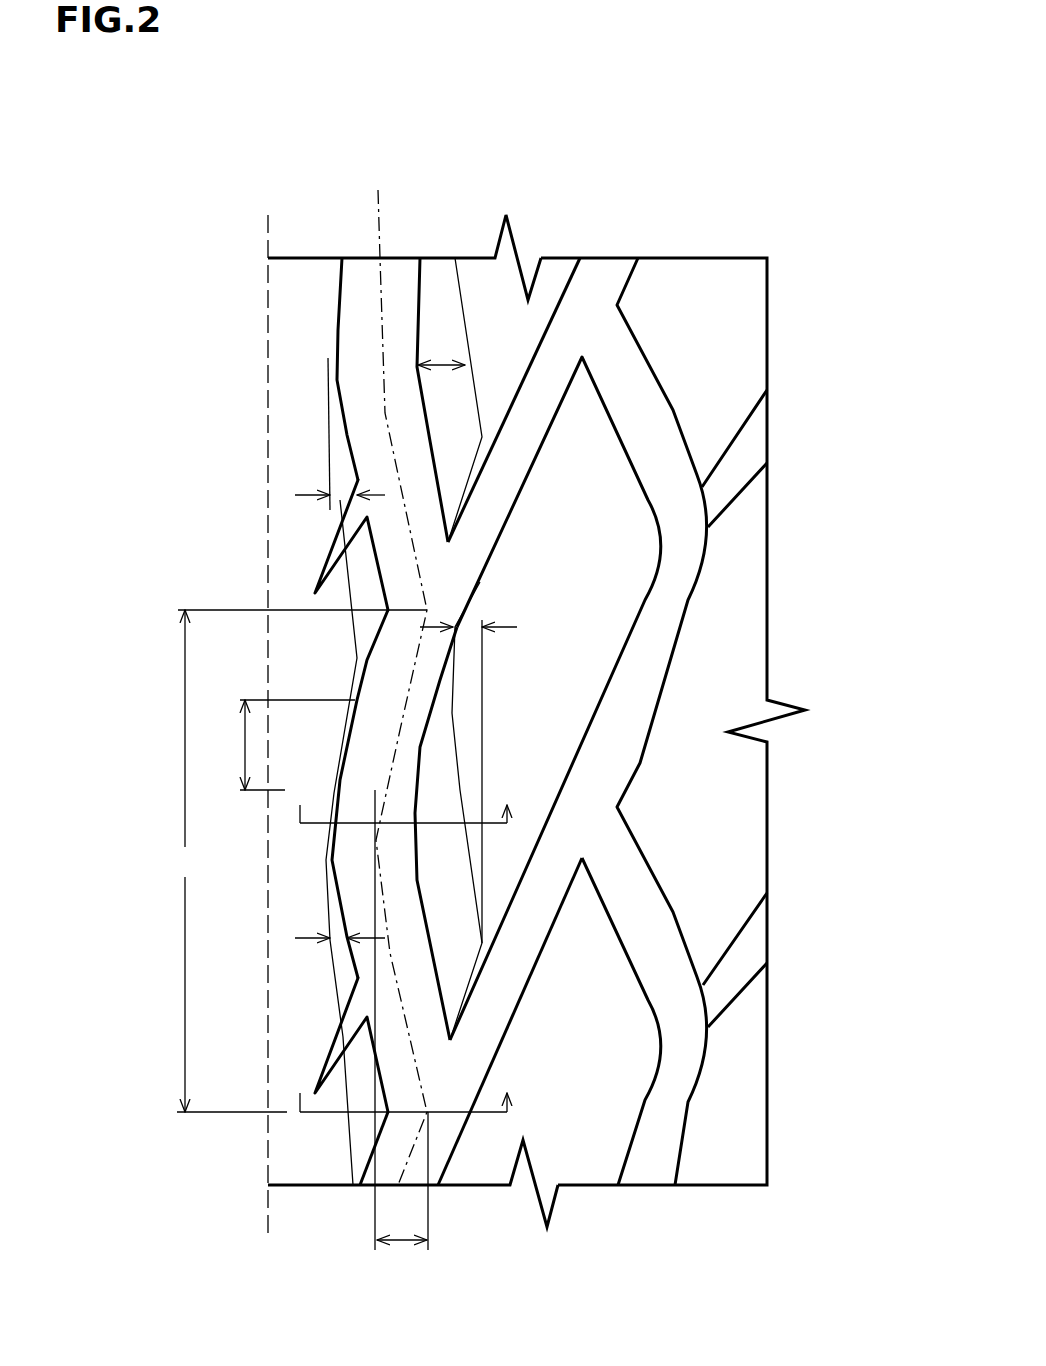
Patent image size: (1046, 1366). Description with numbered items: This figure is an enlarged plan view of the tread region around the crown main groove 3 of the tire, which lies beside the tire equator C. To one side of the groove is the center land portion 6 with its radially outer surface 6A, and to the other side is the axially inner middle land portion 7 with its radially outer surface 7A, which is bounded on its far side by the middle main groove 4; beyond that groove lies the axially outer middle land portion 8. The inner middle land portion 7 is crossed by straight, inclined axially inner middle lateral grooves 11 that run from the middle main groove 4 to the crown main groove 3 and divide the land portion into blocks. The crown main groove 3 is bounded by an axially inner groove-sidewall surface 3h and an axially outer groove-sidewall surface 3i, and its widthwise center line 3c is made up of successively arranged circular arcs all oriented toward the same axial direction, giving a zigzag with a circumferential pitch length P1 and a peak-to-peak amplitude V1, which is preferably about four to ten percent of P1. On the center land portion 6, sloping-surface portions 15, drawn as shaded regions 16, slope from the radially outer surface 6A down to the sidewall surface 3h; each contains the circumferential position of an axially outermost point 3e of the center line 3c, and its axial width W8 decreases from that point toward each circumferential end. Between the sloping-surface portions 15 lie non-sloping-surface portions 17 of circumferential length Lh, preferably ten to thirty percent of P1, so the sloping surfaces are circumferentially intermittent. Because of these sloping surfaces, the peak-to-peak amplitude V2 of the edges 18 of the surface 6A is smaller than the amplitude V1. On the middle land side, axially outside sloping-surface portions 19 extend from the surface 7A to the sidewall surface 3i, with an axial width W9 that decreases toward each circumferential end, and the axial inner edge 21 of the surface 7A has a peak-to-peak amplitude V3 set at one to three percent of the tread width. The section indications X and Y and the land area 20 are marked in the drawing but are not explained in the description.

The tire equator C is at (270, 248).
The center land portion 6 is at (302, 277).
The radially outer surface of the center land portion 6A is at (283, 308).
The crown main groove 3 is at (398, 280).
The axially inner groove-sidewall surface of the crown main groove 3h is at (338, 320).
The widthwise center line of the crown main groove 3c is at (392, 674).
The axially outer groove-sidewall surface of the crown main groove 3i is at (413, 280).
The axially outermost point of the widthwise center line 3e is at (433, 607).
The axially inner middle land portion 7 is at (555, 280).
The radially outer surface of the axially inner middle land portion 7A is at (495, 308).
The middle main groove 4 is at (615, 360).
The axially outer middle land portion 8 is at (695, 280).
The axially inner middle lateral groove 11 is at (515, 960).
The sloping-surface portion 15 is at (330, 358).
The shaded region 16 is at (300, 603).
The non-sloping-surface portion 17 is at (333, 723).
The edge of the radially outer surface of the center land portion 18 is at (340, 497).
The axially outside sloping-surface portion 19 is at (447, 910).
The block corner land portion 20 is at (430, 547).
The axial inner edge of the radially outer surface of the axially inner middle land 21 is at (455, 740).
The circumferential pitch length P1 is at (296, 861).
The circumferential length of the non-sloping-surface portion Lh is at (288, 745).
The peak-to-peak amplitude of the widthwise center line V1 is at (401, 1035).
The peak-to-peak amplitude of the edge of the radially outer surface of the center l V2 is at (342, 492).
The peak-to-peak amplitude of the axial inner edge of the radially outer surface of V3 is at (470, 630).
The axial width of the sloping-surface portion W8 is at (338, 937).
The axial width of the axially outside sloping-surface portion W9 is at (443, 363).
The section line X- X is at (404, 797).
The section line Y- Y is at (403, 1080).